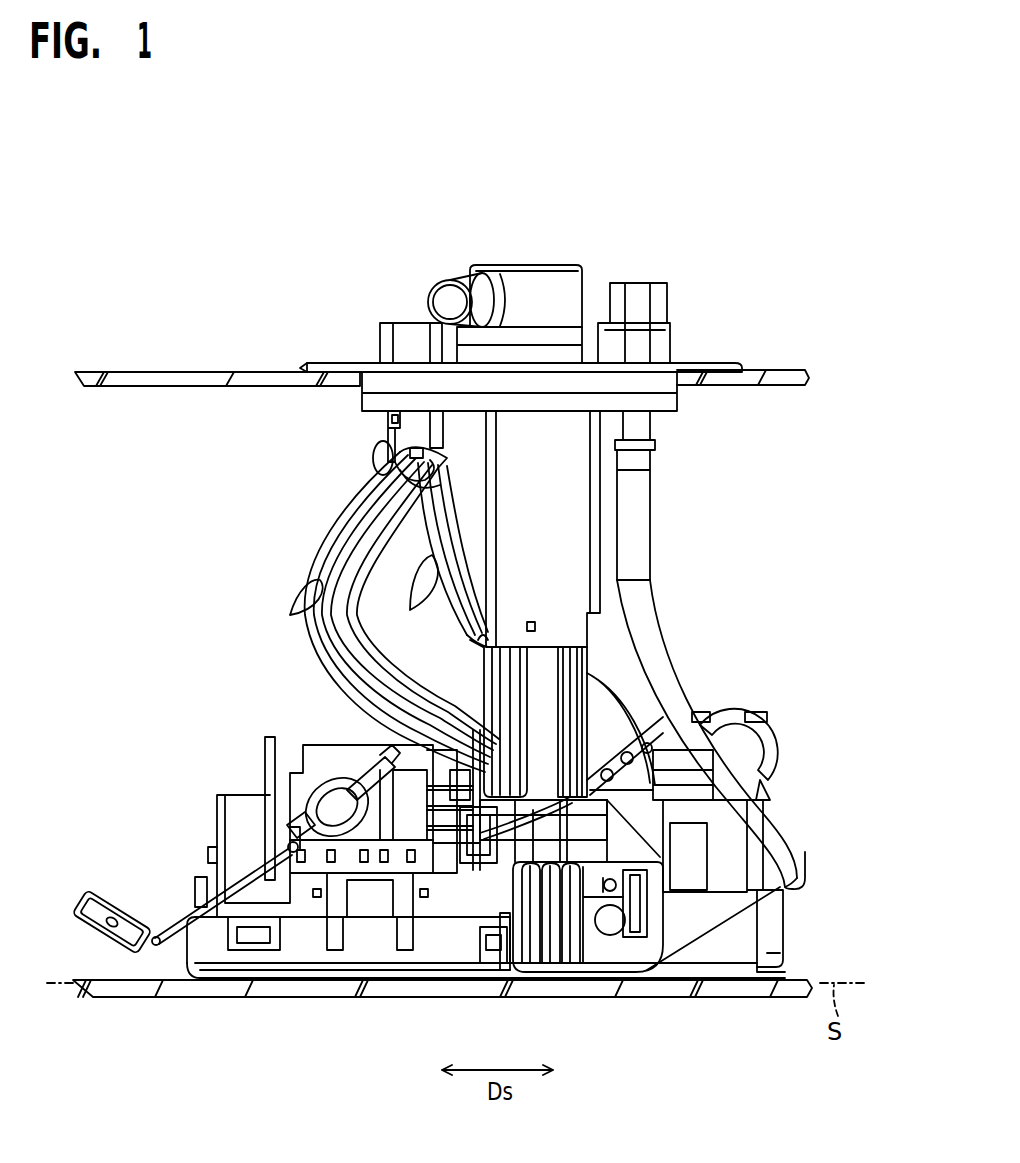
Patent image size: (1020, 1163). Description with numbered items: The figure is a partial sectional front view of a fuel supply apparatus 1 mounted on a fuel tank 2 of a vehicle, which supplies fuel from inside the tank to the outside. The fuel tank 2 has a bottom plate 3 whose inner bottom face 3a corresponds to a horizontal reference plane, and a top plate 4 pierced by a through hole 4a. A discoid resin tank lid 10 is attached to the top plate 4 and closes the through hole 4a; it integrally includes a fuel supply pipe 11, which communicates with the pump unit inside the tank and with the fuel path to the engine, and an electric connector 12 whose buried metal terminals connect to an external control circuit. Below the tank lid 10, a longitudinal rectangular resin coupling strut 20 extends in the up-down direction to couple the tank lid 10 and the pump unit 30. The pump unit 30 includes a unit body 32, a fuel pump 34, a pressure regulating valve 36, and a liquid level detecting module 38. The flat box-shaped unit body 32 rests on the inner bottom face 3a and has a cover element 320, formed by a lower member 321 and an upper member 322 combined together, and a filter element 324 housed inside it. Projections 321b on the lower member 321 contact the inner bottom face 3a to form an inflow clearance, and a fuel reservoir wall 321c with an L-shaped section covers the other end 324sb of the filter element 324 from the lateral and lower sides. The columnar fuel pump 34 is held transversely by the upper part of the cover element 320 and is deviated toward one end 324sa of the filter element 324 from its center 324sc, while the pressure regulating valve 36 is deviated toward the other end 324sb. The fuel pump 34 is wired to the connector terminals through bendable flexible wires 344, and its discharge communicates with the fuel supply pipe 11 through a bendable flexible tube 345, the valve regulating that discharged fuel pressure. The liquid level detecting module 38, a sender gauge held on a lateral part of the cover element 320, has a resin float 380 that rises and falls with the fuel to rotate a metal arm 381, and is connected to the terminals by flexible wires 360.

The fuel supply apparatus 1 is at (745, 554).
The fuel tank 2 is at (786, 367).
The bottom plate 3 is at (93, 998).
The inner bottom face 3a is at (100, 982).
The top plate 4 is at (107, 372).
The through hole 4a is at (672, 363).
The tank lid 10 is at (372, 363).
The fuel supply pipe 11 is at (445, 292).
The electric connector 12 is at (400, 323).
The coupling strut 20 is at (590, 666).
The pump unit 30 is at (791, 783).
The unit body 32 is at (215, 842).
The fuel pump 34 is at (450, 770).
The pressure regulating valve 36 is at (773, 715).
The liquid level detecting module 38 is at (303, 763).
The cover element 320 is at (703, 886).
The lower member 321 is at (767, 918).
The projections 321b is at (304, 981).
The fuel reservoir wall 321c is at (785, 965).
The upper member 322 is at (737, 890).
The filter element 324 is at (360, 957).
The one end 324sa is at (200, 958).
The other end 324sb is at (748, 966).
The center 324sc is at (490, 987).
The flexible wires 344 is at (325, 592).
The flexible tube 345 is at (673, 710).
The flexible wires 360 is at (435, 555).
The resin float 380 is at (123, 937).
The metal arm 381 is at (177, 926).